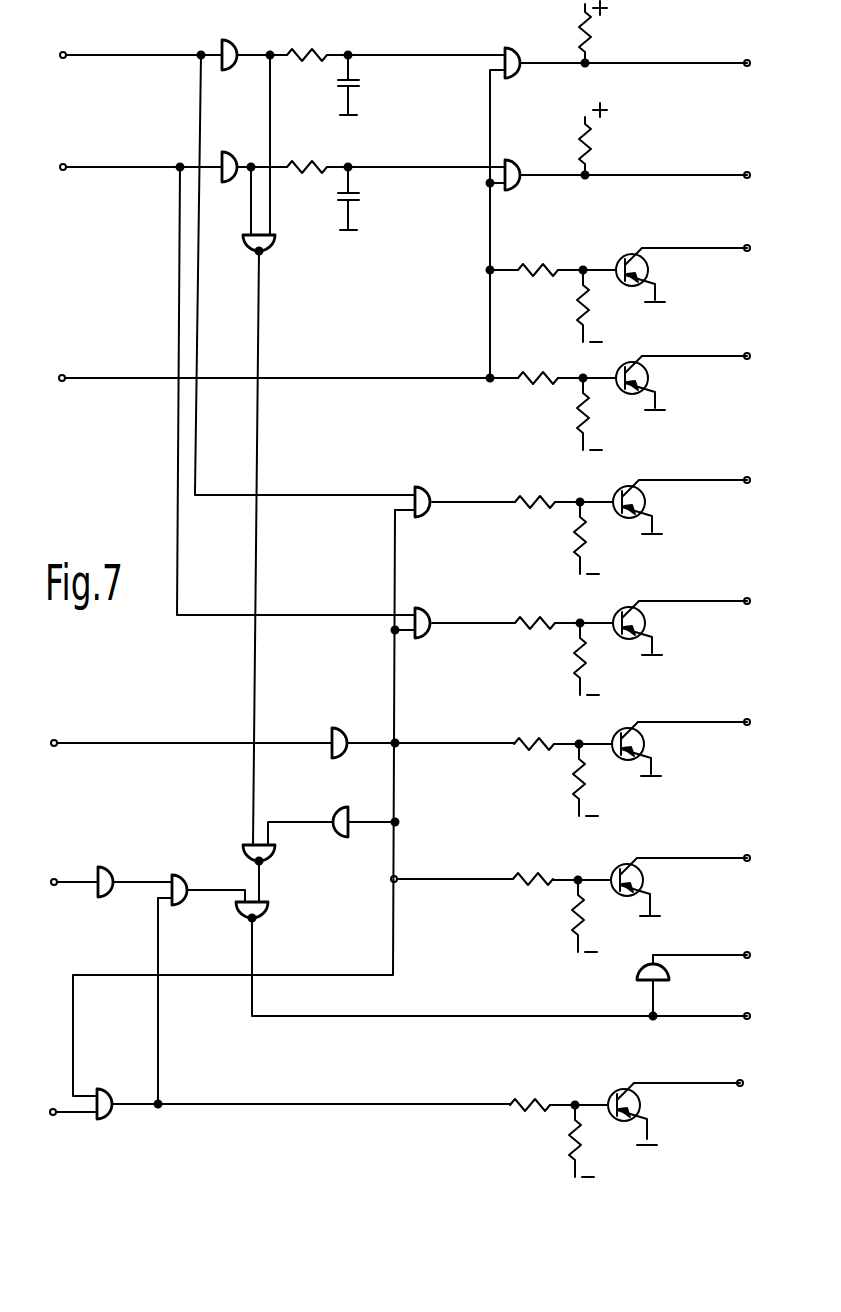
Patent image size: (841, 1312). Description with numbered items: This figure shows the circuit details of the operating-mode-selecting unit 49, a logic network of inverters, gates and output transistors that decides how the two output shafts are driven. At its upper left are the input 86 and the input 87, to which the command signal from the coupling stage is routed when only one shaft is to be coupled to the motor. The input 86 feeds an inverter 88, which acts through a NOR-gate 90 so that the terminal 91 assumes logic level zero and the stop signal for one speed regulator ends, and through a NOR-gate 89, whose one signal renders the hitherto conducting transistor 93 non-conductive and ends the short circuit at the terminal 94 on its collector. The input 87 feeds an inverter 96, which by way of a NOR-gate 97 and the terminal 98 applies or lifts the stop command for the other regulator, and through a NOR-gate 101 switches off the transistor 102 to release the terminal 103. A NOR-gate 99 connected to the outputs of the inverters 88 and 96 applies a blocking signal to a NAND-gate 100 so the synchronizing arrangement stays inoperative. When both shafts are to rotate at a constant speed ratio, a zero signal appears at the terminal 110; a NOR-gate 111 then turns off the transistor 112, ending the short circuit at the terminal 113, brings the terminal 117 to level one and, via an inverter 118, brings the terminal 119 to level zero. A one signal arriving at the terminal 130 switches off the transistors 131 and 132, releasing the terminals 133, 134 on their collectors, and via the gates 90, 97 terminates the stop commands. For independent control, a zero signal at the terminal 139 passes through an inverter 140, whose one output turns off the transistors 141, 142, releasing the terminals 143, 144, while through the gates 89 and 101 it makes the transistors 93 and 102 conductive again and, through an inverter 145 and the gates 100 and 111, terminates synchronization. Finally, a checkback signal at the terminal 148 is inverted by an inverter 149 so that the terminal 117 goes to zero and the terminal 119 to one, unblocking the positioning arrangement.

The operating-mode-selecting unit 49 is at (341, 1119).
The input 86 is at (66, 56).
The input 87 is at (66, 164).
The inverter 88 is at (234, 42).
The NOR-gate 89 is at (428, 488).
The NOR-gate 90 is at (514, 43).
The terminal 91 is at (745, 61).
The transistor 93 is at (608, 519).
The terminal 94 is at (694, 458).
The inverter 96 is at (228, 152).
The NOR-gate 97 is at (518, 159).
The terminal 98 is at (745, 173).
The NOR-gate 99 is at (247, 255).
The NAND-gate 100 is at (242, 844).
The NOR-gate 101 is at (430, 608).
The transistor 102 is at (608, 630).
The terminal 103 is at (694, 580).
The terminal 110 is at (53, 1109).
The NOR-gate 111 is at (113, 1119).
The transistor 112 is at (603, 1112).
The terminal 113 is at (692, 1061).
The terminal 117 is at (746, 1014).
The inverter 118 is at (637, 974).
The terminal 119 is at (745, 953).
The terminal 130 is at (65, 375).
The transistor 131 is at (611, 283).
The transistor 132 is at (611, 382).
The terminal 133 is at (696, 226).
The terminal 134 is at (696, 336).
The terminal 139 is at (57, 740).
The inverter 140 is at (331, 730).
The transistor 141 is at (607, 762).
The transistor 142 is at (606, 890).
The terminal 143 is at (694, 704).
The terminal 144 is at (693, 840).
The inverter 145 is at (337, 838).
The terminal 148 is at (54, 879).
The inverter 149 is at (115, 868).